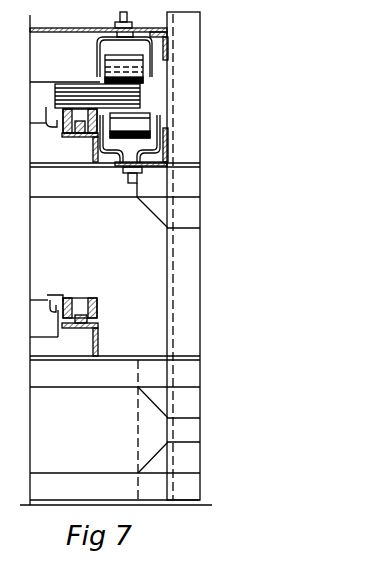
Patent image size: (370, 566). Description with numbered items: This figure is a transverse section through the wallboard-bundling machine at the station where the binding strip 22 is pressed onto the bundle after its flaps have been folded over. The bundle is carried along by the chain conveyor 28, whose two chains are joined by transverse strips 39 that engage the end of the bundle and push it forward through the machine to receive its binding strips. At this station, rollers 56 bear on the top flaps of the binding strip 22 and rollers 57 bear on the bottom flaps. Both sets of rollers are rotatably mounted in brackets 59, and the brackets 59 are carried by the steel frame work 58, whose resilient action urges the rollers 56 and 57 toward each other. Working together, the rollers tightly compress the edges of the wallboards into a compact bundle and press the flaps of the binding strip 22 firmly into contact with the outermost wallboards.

The binding strip 22 is at (143, 98).
The chain conveyor 28 is at (97, 305).
The transverse strips 39 is at (37, 128).
The rollers 56 is at (123, 53).
The rollers 57 is at (127, 135).
The steel frame work 58 is at (173, 149).
The brackets 59 is at (152, 67).